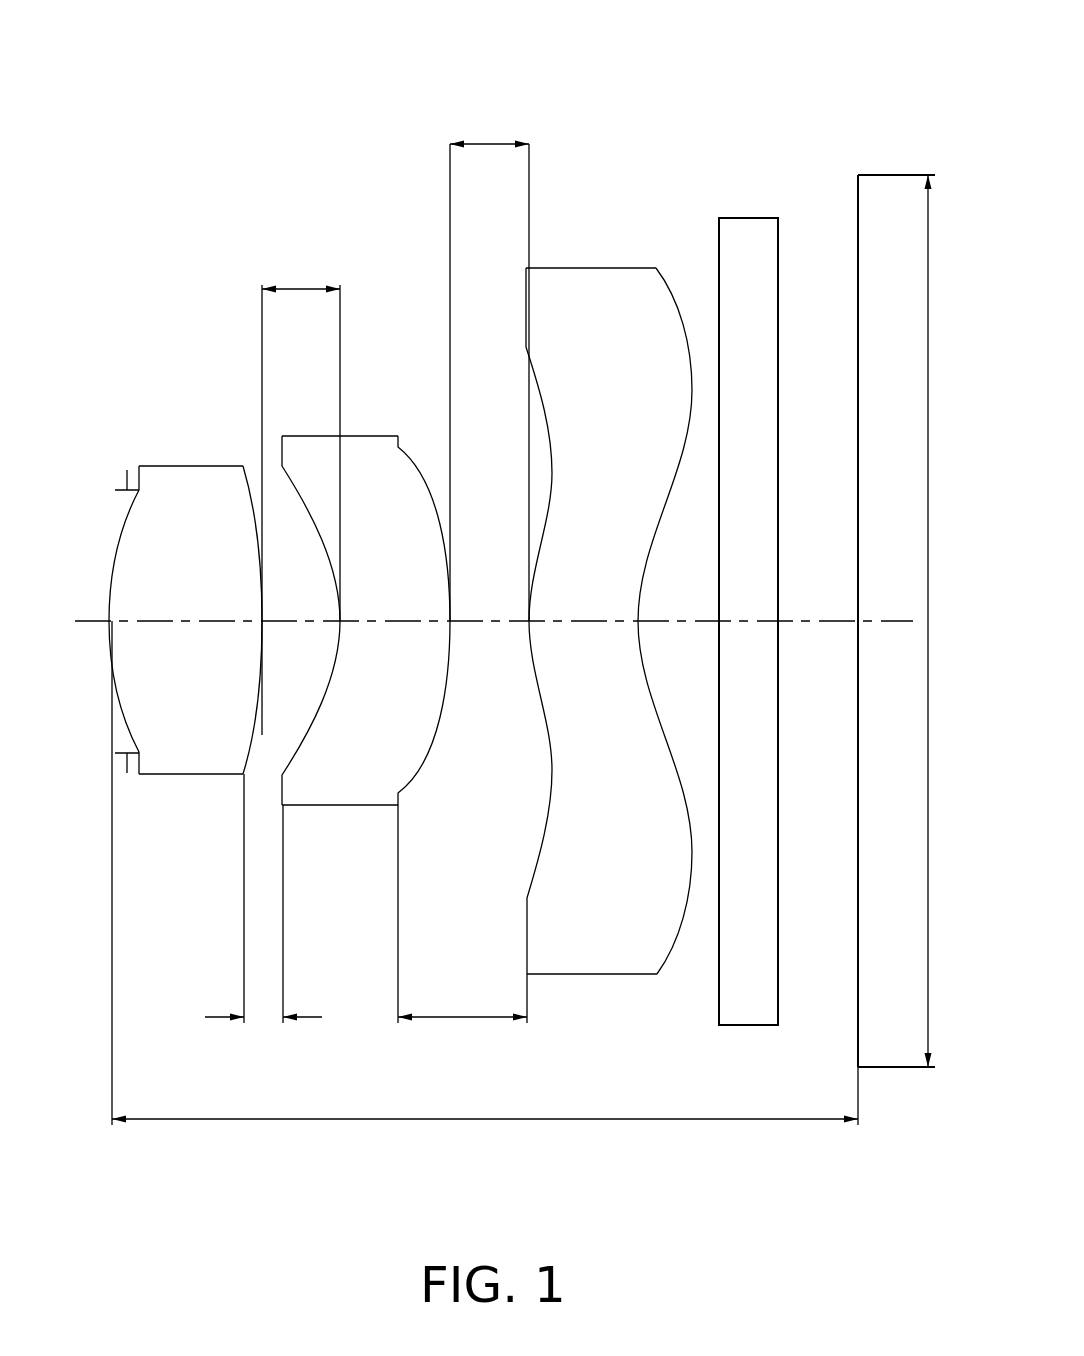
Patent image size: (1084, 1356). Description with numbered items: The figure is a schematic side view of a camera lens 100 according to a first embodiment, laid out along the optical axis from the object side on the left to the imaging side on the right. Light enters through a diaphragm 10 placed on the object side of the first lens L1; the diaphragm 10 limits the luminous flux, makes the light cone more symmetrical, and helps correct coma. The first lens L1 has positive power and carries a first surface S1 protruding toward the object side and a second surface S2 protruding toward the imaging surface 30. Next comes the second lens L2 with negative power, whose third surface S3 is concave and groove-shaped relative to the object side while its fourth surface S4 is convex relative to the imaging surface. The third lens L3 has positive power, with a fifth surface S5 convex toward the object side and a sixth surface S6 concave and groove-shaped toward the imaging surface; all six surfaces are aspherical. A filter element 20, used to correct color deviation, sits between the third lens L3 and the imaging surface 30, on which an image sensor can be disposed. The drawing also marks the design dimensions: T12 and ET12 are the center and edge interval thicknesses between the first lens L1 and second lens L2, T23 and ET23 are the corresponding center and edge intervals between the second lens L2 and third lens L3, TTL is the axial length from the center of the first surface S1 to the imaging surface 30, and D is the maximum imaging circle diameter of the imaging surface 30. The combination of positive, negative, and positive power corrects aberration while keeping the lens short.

The camera lens 100 is at (555, 34).
The diaphragm 10 is at (120, 490).
The first lens L1 is at (177, 658).
The second lens L2 is at (377, 659).
The third lens L3 is at (593, 658).
The first surface S1 is at (122, 708).
The second surface S2 is at (263, 700).
The third surface S3 is at (318, 523).
The fourth surface S4 is at (438, 705).
The fifth surface S5 is at (552, 788).
The sixth surface S6 is at (665, 955).
The filter element 20 is at (762, 1005).
The imaging surface 30 is at (858, 968).
The thickness of the center interval between the first lens and the second lens T12 is at (301, 495).
The thickness of the center interval between the second lens and the third lens T23 is at (489, 364).
The thickness of the edge interval between the first lens and the second lens ET12 is at (263, 914).
The thickness of the edge interval between the second lens and the third lens ET23 is at (462, 929).
The length of the camera lens TTL is at (485, 888).
The maximum imaging circle diameter D is at (943, 621).